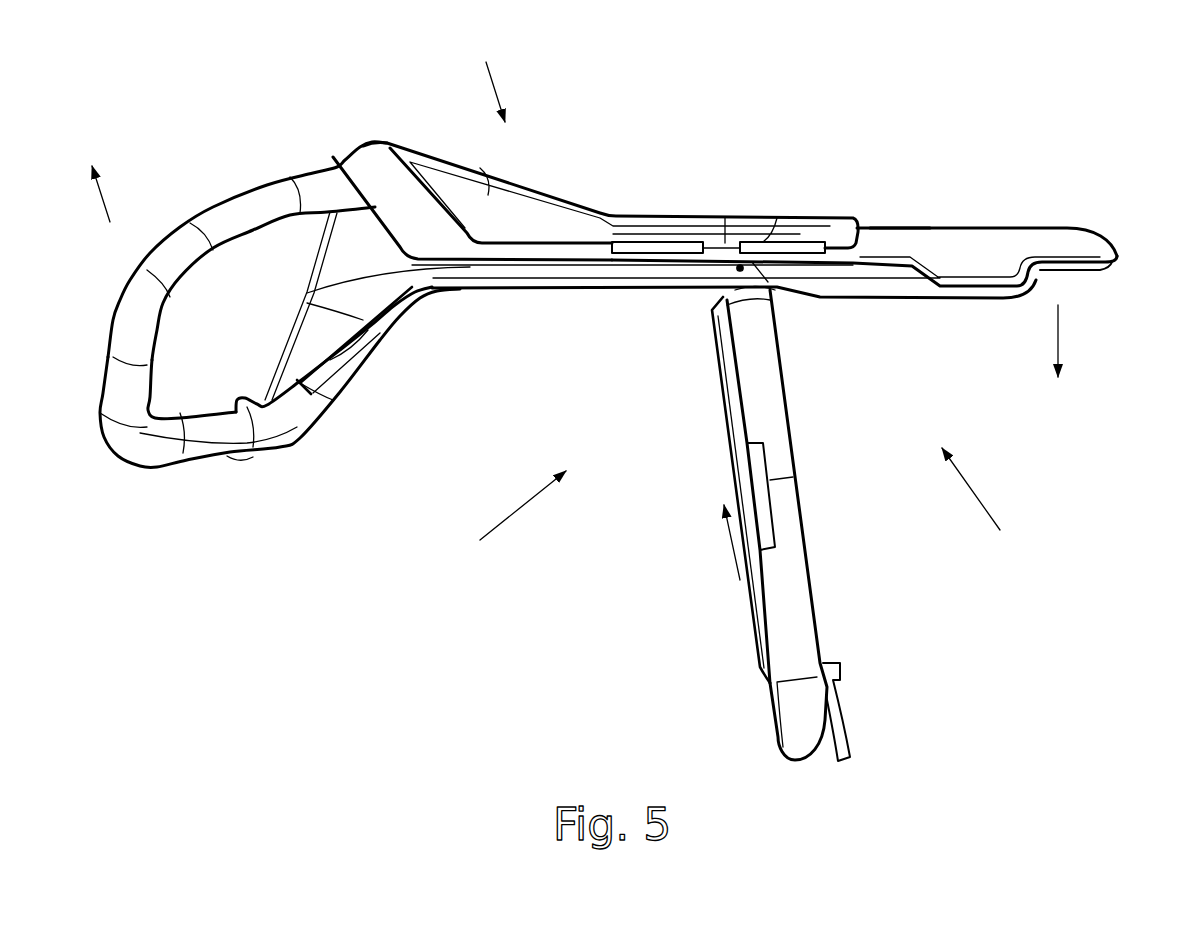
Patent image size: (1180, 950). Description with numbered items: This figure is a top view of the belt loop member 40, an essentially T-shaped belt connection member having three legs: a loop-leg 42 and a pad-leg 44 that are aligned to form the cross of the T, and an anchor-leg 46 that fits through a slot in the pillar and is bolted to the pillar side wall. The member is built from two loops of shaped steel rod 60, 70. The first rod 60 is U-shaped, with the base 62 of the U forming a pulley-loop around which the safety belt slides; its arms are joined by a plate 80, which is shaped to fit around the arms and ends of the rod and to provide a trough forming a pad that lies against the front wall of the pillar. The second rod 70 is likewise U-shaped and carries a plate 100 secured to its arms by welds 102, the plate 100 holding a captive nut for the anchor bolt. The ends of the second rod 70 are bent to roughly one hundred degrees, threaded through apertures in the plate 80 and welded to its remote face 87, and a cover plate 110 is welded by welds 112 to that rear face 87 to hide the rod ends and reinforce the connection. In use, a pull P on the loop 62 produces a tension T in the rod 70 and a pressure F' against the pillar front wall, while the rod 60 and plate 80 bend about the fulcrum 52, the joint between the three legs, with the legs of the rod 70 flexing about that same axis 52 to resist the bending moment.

The belt loop member 40 is at (815, 134).
The loop-leg 42 is at (430, 302).
The pad-leg 44 is at (993, 224).
The anchor-leg 46 is at (826, 633).
The fulcrum 52 is at (738, 270).
The first rod 60 is at (150, 468).
The base of the U 62 is at (203, 200).
The second rod 70 is at (790, 398).
The plate 80 is at (1071, 226).
The remote face of the plate 87 is at (898, 227).
The plate 100 is at (730, 420).
The welds 102 is at (766, 527).
The cover plate 110 is at (558, 196).
The welds 112 is at (527, 250).